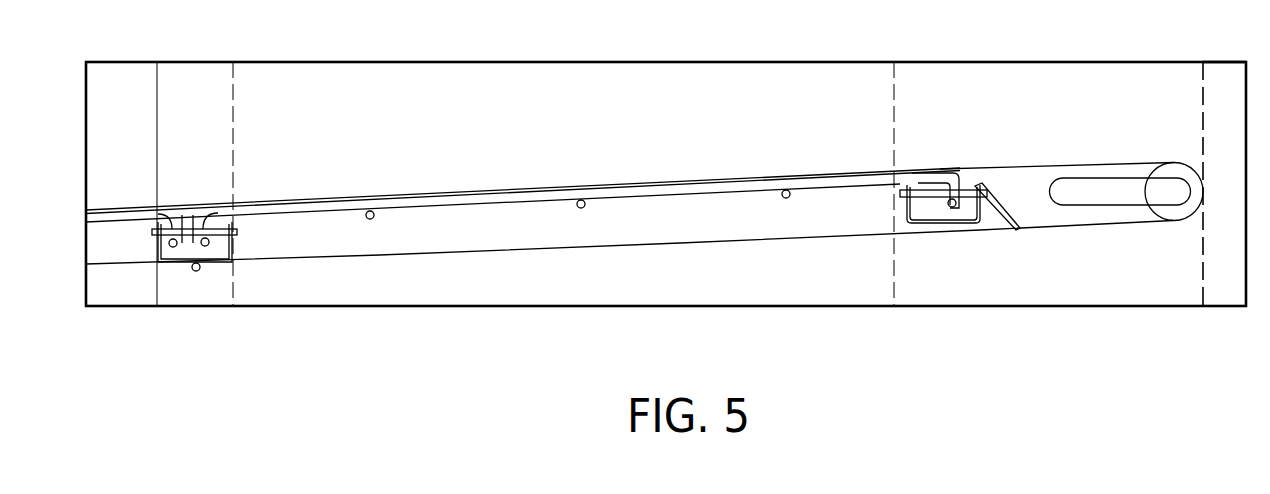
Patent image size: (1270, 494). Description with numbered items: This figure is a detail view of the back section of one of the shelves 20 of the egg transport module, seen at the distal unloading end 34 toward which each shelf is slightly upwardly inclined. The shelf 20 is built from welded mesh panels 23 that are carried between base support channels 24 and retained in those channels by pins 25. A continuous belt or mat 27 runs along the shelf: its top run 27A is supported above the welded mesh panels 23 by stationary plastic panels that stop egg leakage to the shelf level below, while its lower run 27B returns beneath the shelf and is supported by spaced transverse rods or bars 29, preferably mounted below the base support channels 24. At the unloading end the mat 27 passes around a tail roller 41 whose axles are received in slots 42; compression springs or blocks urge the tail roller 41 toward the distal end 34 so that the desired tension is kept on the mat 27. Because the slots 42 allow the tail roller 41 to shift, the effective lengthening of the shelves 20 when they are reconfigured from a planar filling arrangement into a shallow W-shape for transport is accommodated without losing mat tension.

The shelf 20 is at (655, 166).
The welded mesh panel 23 is at (719, 202).
The base support channel 24 is at (213, 263).
The pin 25 is at (215, 222).
The continuous belt or mat 27 is at (1032, 156).
The top run of mat 27A is at (1100, 163).
The lower run of mat 27B is at (1048, 228).
The transverse rod or bar 29 is at (196, 271).
The distal unloading end 34 is at (1219, 58).
The tail roller 41 is at (1184, 212).
The slot 42 is at (1103, 205).